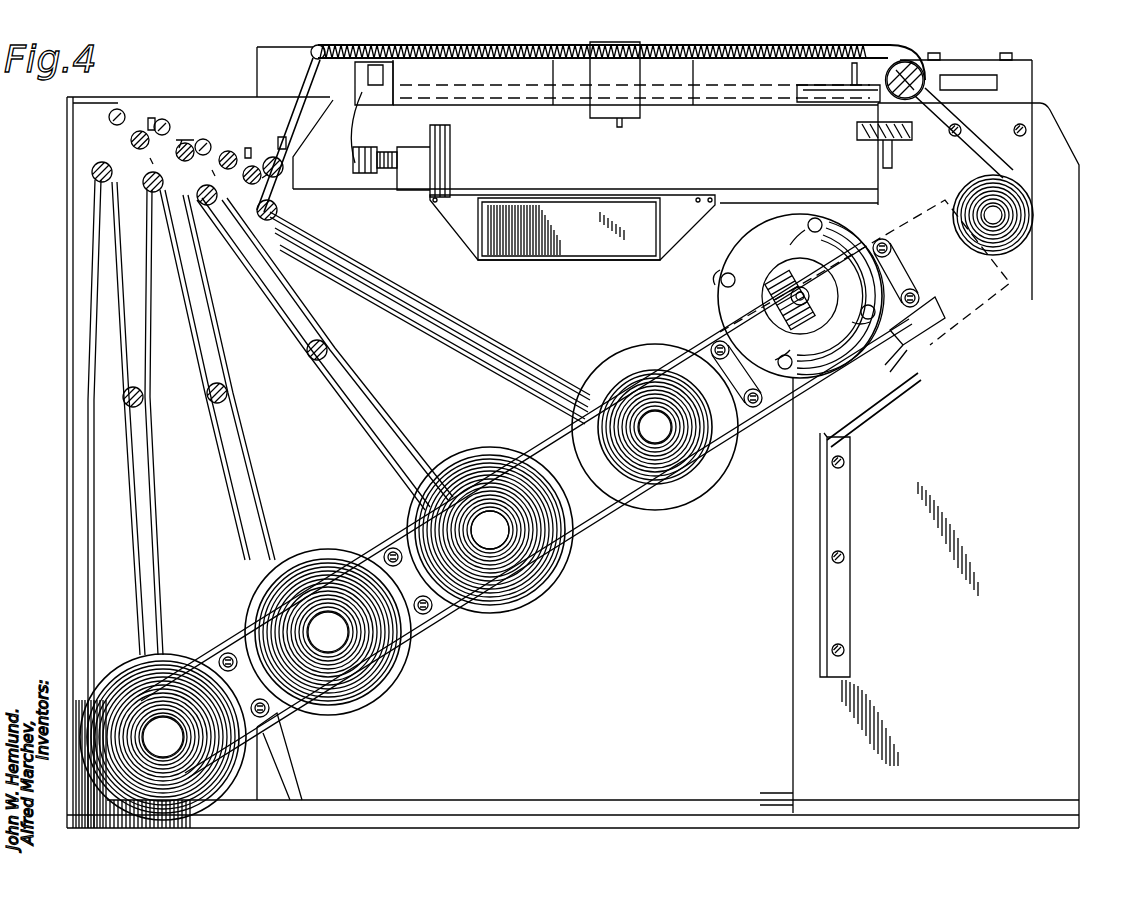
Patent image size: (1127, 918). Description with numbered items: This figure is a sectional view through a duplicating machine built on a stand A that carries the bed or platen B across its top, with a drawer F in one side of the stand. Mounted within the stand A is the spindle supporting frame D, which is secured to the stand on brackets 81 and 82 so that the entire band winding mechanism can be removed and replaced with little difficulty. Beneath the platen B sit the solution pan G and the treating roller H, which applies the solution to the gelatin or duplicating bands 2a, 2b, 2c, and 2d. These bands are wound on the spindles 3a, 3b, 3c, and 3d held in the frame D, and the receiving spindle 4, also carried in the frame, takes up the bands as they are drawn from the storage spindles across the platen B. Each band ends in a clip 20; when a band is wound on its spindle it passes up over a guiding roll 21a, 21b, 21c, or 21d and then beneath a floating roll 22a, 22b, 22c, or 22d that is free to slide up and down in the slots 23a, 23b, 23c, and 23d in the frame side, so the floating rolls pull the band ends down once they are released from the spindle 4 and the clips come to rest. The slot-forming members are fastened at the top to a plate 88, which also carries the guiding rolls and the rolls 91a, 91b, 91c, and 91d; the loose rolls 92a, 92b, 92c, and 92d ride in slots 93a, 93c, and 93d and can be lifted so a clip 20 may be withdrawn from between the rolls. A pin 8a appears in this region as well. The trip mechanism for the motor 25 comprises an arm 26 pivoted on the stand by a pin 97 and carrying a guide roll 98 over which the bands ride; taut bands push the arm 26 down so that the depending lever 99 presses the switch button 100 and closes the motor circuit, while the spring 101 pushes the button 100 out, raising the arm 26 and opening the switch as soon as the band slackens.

The stand A is at (1079, 458).
The bed or platen B is at (527, 58).
The spindle supporting frame D is at (590, 505).
The drawer F is at (625, 245).
The solution pan G is at (820, 102).
The treating roller H is at (910, 98).
The receiving spindle 4 is at (1008, 215).
The pin 8a is at (284, 108).
The clip 20 is at (190, 113).
The guiding roll 21a is at (275, 225).
The guiding roll 21b is at (209, 210).
The guiding roll 21c is at (143, 240).
The guiding roll 21d is at (92, 174).
The floating roll 22a is at (310, 200).
The floating roll 22b is at (329, 352).
The floating roll 22c is at (228, 400).
The floating roll 22d is at (141, 406).
The slot 23a is at (475, 338).
The slot 23b is at (368, 440).
The slot 23c is at (242, 456).
The slot 23d is at (157, 533).
The gelatin or duplicating band 2a is at (395, 313).
The gelatin or duplicating band 2b is at (282, 326).
The gelatin or duplicating band 2c is at (208, 450).
The gelatin or duplicating band 2d is at (88, 398).
The spindle 3a is at (608, 372).
The spindle 3b is at (445, 455).
The spindle 3c is at (303, 557).
The spindle 3d is at (175, 655).
The motor 25 is at (722, 308).
The arm 26 is at (314, 57).
The bracket 81 is at (278, 733).
The bracket 82 is at (932, 338).
The plate 88 is at (163, 118).
The roll 91a is at (284, 167).
The roll 91b is at (237, 155).
The roll 91c is at (205, 139).
The roll 91d is at (151, 118).
The loose roll 92a is at (285, 138).
The loose roll 92b is at (199, 169).
The loose roll 92c is at (147, 163).
The loose roll 92d is at (131, 130).
The slot 93a is at (266, 176).
The slot 93c is at (184, 140).
The slot 93d is at (115, 108).
The pin 97 is at (397, 73).
The guide roll 98 is at (312, 50).
The depending lever 99 is at (352, 114).
The switch button 100 is at (378, 166).
The spring 101 is at (382, 153).